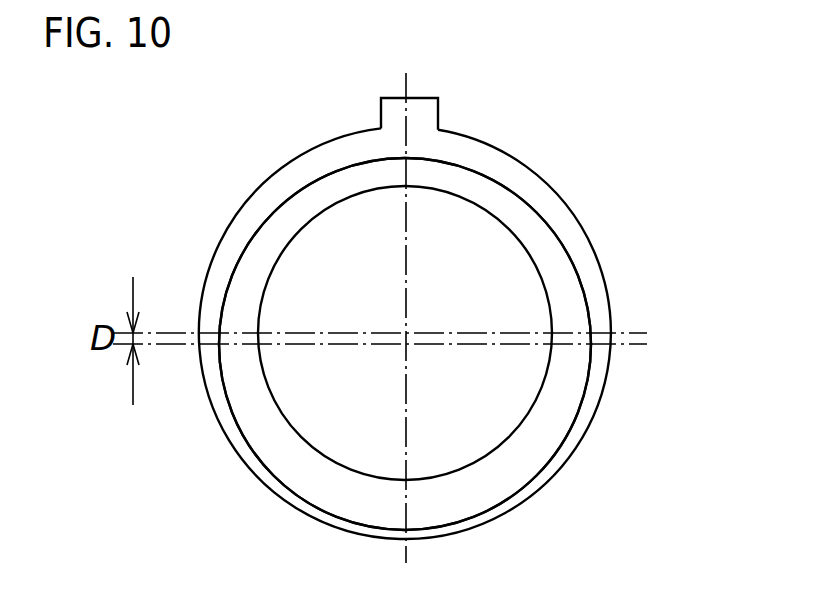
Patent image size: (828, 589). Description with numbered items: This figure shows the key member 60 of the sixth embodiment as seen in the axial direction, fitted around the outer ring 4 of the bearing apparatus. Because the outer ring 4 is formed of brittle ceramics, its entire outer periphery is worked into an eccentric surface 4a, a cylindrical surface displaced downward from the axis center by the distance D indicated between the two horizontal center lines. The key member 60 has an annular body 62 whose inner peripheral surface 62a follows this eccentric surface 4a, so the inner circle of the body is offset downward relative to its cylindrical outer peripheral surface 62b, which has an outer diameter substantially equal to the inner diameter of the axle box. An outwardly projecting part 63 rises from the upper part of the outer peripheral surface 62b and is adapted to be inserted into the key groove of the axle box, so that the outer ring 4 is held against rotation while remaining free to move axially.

The outer ring 4 is at (445, 344).
The eccentric surface 4a is at (562, 243).
The key member 60 is at (454, 309).
The annular body 62 is at (423, 309).
The inner peripheral surface 62a is at (498, 186).
The outer peripheral surface 62b is at (468, 138).
The outwardly projecting part 63 is at (388, 110).